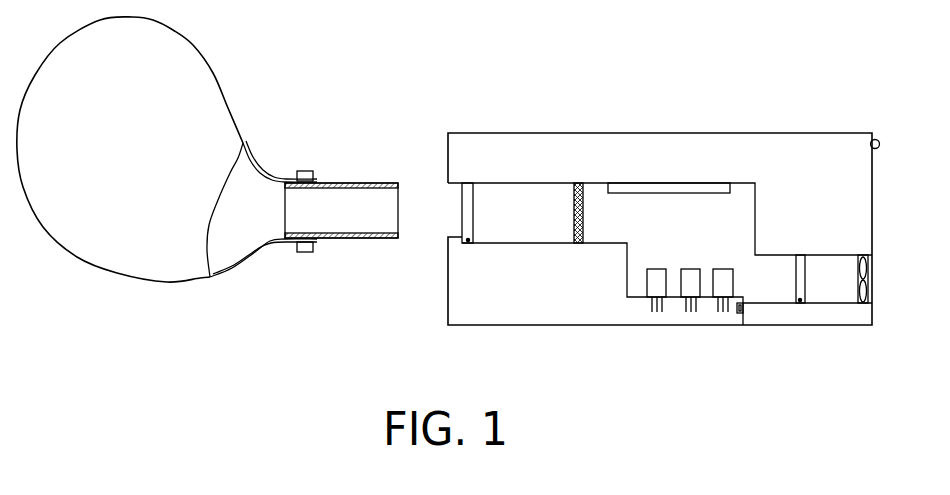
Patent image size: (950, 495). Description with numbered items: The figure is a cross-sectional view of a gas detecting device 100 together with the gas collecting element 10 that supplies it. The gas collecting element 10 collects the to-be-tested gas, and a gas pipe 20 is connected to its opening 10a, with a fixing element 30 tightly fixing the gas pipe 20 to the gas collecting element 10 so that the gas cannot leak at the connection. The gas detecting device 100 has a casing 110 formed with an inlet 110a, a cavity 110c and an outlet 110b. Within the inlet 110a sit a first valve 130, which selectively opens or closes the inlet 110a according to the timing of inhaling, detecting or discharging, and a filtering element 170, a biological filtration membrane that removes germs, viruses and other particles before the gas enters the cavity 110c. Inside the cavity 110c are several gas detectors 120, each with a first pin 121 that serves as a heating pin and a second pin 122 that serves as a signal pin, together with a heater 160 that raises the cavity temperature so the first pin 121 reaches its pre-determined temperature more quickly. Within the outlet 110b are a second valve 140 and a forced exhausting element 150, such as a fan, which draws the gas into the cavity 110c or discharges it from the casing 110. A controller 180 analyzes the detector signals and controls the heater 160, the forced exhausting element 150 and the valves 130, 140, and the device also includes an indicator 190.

The gas collecting element 10 is at (242, 128).
The opening 10a is at (275, 228).
The gas pipe 20 is at (387, 183).
The fixing element 30 is at (302, 171).
The gas detecting device 100 is at (540, 72).
The casing 110 is at (751, 145).
The inlet 110a is at (453, 210).
The outlet 110b is at (830, 265).
The cavity 110c is at (712, 220).
The gas detector 120 is at (683, 283).
The first pin 121 is at (732, 308).
The second pin 122 is at (715, 304).
The first valve 130 is at (467, 183).
The second valve 140 is at (806, 302).
The forced exhausting element 150 is at (863, 304).
The heater 160 is at (660, 190).
The filtering element 170 is at (578, 183).
The controller 180 is at (744, 314).
The indicator 190 is at (873, 138).